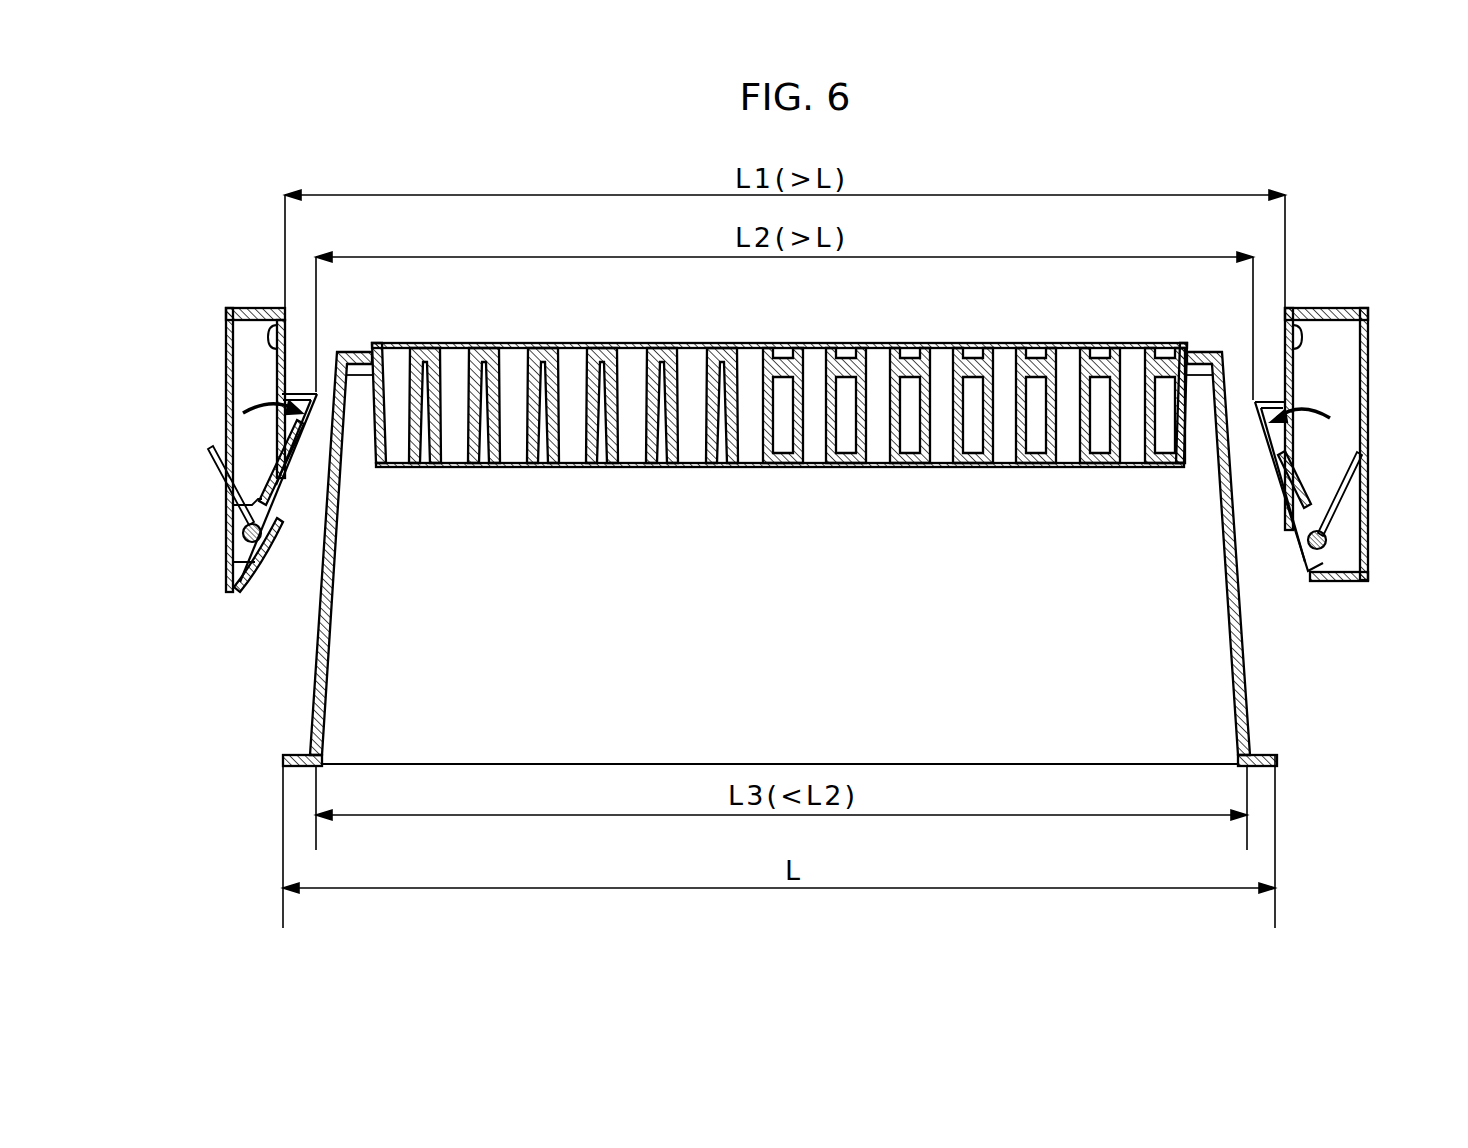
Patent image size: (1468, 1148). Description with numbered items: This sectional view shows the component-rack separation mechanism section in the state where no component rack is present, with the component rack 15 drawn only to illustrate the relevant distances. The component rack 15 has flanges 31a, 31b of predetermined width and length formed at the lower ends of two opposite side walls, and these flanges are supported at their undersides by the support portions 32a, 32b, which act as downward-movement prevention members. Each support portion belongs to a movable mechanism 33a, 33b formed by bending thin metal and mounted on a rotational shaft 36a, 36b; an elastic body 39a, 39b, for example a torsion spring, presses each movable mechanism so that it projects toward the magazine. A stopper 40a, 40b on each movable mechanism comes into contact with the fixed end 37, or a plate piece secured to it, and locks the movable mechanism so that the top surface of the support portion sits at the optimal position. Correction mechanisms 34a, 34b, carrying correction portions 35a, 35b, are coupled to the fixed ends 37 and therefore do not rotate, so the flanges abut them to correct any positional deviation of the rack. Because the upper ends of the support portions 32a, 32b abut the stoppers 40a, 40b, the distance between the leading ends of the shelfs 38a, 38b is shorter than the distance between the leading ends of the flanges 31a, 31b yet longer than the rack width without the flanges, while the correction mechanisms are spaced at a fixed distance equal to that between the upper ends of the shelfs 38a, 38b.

The component rack 15 is at (1243, 640).
The flange 31a is at (300, 755).
The flange 31b is at (1265, 753).
The support portion 32a is at (197, 462).
The support portion 32b is at (1367, 481).
The movable mechanism 33a is at (305, 432).
The movable mechanism 33b is at (1285, 442).
The correction mechanism 34a is at (283, 420).
The correction mechanism 34b is at (1285, 425).
The correction portion 35a is at (203, 493).
The correction portion 35b is at (1356, 486).
The rotational shaft 36a is at (250, 535).
The rotational shaft 36b is at (1320, 544).
The fixed end 37 is at (275, 308).
The shelf 38a is at (290, 385).
The shelf 38b is at (1262, 398).
The elastic body 39a is at (225, 492).
The elastic body 39b is at (1350, 497).
The stopper 40a is at (265, 332).
The stopper 40b is at (1300, 340).